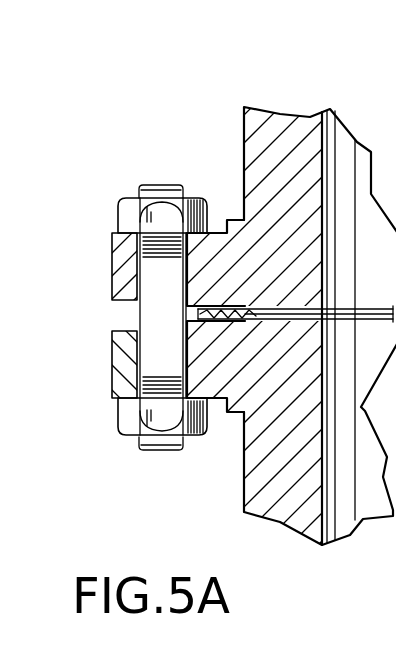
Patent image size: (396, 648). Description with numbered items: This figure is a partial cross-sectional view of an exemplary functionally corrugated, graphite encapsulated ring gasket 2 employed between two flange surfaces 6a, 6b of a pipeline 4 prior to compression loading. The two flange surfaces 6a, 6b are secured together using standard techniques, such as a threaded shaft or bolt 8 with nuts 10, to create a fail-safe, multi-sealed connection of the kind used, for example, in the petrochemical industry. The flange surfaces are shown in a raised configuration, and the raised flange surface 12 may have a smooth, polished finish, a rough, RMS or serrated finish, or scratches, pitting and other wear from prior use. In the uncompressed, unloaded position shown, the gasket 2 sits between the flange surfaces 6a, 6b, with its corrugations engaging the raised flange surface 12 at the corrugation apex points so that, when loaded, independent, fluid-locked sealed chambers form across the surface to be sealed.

The ring gasket 2 is at (227, 302).
The pipeline 4 is at (270, 133).
The flange surface 6a is at (120, 255).
The flange surface 6b is at (117, 352).
The bolt 8 is at (157, 287).
The nut 10 is at (128, 203).
The raised flange surface 12 is at (200, 307).